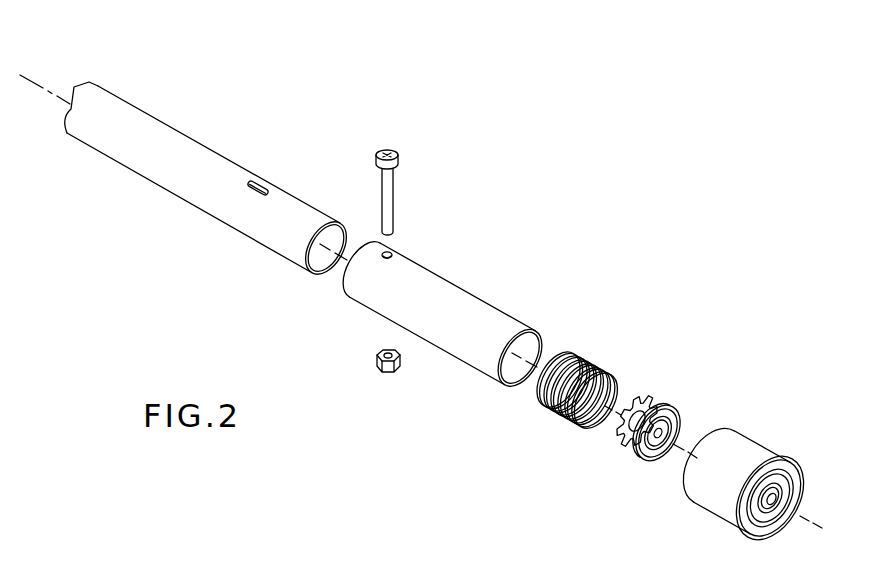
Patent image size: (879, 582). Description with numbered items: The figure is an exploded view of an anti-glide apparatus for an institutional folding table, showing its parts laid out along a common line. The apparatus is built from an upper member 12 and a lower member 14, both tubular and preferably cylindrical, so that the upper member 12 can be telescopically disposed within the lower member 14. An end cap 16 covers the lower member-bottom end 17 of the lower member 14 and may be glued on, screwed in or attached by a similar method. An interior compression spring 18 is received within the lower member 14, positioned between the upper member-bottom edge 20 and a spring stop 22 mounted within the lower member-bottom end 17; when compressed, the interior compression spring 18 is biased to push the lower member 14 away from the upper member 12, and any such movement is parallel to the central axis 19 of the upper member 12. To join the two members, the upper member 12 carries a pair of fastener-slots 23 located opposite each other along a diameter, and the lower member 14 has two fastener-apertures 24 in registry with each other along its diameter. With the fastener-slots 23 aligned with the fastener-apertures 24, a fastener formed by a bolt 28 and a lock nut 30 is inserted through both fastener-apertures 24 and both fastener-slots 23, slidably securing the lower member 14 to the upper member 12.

The upper member 12 is at (210, 205).
The lower member 14 is at (481, 312).
The end cap 16 is at (745, 445).
The lower member-bottom end 17 is at (527, 325).
The interior compression spring 18 is at (562, 412).
The central axis 19 is at (42, 88).
The upper member-bottom edge 20 is at (315, 275).
The spring stop 22 is at (680, 405).
The fastener-slot 23 is at (262, 180).
The fastener-aperture 24 is at (393, 253).
The bolt 28 is at (388, 193).
The lock nut 30 is at (375, 363).